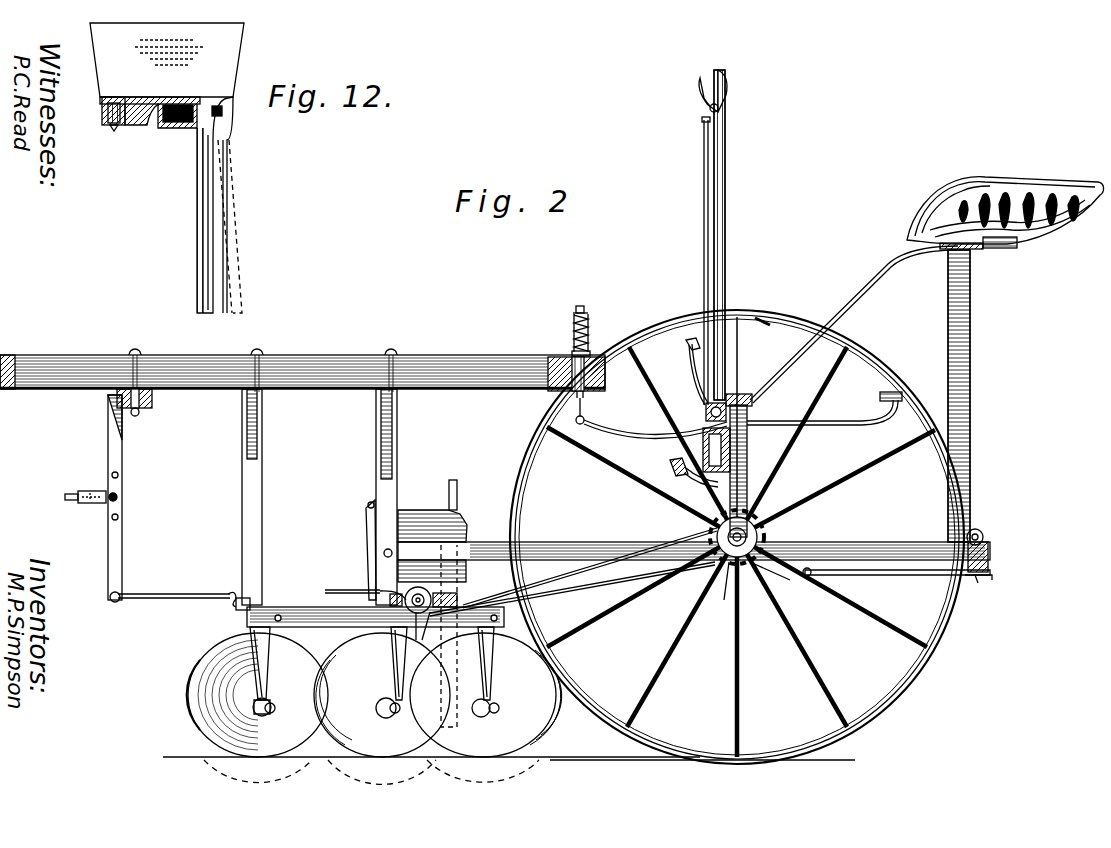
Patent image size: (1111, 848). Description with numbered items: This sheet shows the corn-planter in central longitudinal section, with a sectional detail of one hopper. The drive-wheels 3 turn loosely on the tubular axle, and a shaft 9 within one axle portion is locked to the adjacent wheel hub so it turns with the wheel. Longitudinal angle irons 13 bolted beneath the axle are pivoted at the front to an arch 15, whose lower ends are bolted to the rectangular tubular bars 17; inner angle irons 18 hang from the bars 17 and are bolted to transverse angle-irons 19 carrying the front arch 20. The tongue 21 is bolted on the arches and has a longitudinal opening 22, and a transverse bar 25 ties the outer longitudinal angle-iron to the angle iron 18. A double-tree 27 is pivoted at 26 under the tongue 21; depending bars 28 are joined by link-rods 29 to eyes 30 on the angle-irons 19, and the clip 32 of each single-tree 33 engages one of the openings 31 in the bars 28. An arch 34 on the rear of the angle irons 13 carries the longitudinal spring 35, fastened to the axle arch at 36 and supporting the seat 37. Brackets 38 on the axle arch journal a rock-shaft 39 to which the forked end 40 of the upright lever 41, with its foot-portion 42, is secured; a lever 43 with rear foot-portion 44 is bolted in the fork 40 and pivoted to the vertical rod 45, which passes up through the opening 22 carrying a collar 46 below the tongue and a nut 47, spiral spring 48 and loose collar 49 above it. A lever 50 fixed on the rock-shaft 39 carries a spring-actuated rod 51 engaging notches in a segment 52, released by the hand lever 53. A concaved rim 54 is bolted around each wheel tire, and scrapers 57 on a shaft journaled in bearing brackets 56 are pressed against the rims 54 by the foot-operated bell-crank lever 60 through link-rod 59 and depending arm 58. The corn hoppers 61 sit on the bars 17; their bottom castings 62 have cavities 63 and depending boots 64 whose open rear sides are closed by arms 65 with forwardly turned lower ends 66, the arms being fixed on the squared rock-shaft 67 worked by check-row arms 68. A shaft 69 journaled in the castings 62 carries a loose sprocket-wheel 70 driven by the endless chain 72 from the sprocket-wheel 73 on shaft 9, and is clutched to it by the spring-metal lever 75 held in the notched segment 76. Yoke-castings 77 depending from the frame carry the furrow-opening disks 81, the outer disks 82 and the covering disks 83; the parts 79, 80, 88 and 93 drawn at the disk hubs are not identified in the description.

In FIG. 2, the wheels 3 is at (788, 322).
In FIG. 2, the shaft 9 is at (750, 525).
In FIG. 2, the angle irons 13 is at (694, 551).
In FIG. 2, the arch 15 is at (394, 497).
In FIG. 12, the tubular bars 17 is at (108, 126).
In FIG. 2, the tubular bars 17 is at (388, 606).
In FIG. 2, the angle irons 18 is at (375, 617).
In FIG. 2, the angle-irons 19 is at (268, 604).
In FIG. 2, the arch 20 is at (264, 497).
In FIG. 2, the tongue 21 is at (205, 350).
In FIG. 2, the slot or opening 22 is at (590, 358).
In FIG. 2, the transversely extending bar 25 is at (590, 568).
In FIG. 2, the pivot 26 is at (139, 414).
In FIG. 2, the double-tree 27 is at (152, 405).
In FIG. 2, the bars 28 is at (105, 498).
In FIG. 2, the link-rods 29 is at (174, 586).
In FIG. 2, the eyes 30 is at (225, 590).
In FIG. 2, the openings 31 is at (120, 515).
In FIG. 2, the clip 32 is at (110, 500).
In FIG. 2, the single-trees 33 is at (85, 487).
In FIG. 2, the arch 34 is at (972, 396).
In FIG. 2, the longitudinal spring 35 is at (892, 288).
In FIG. 2, the securing point 36 is at (750, 394).
In FIG. 2, the seat 37 is at (1005, 204).
In FIG. 2, the brackets 38 is at (740, 450).
In FIG. 2, the rock-shaft 39 is at (706, 408).
In FIG. 2, the forked end 40 is at (748, 430).
In FIG. 2, the lever 41 is at (694, 378).
In FIG. 2, the foot-portion 42 is at (686, 340).
In FIG. 2, the lever 43 is at (741, 423).
In FIG. 2, the foot-portion 44 is at (882, 394).
In FIG. 2, the vertical rod 45 is at (584, 418).
In FIG. 2, the collar or enlargement 46 is at (584, 394).
In FIG. 2, the nut 47 is at (578, 301).
In FIG. 2, the spring 48 is at (574, 330).
In FIG. 2, the collar 49 is at (572, 353).
In FIG. 2, the lever 50 is at (731, 235).
In FIG. 2, the spring-actuated rod 51 is at (696, 261).
In FIG. 2, the segment 52 is at (670, 466).
In FIG. 2, the hand lever 53 is at (699, 86).
In FIG. 2, the concaved rim 54 is at (790, 322).
In FIG. 2, the bearing brackets 56 is at (978, 530).
In FIG. 2, the scrapers 57 is at (976, 580).
In FIG. 2, the arm 58 is at (988, 556).
In FIG. 2, the link-rod 59 is at (893, 578).
In FIG. 2, the bell-crank lever 60 is at (800, 570).
In FIG. 12, the corn hoppers or receptacles 61 is at (167, 60).
In FIG. 2, the corn hoppers or receptacles 61 is at (432, 537).
In FIG. 12, the castings 62 is at (158, 97).
In FIG. 12, the cavities 63 is at (188, 104).
In FIG. 12, the boots or spouts 64 is at (196, 256).
In FIG. 2, the boots or spouts 64 is at (441, 690).
In FIG. 12, the arms 65 is at (228, 195).
In FIG. 12, the lower ends of arms 66 is at (228, 305).
In FIG. 12, the squared rock-shaft 67 is at (224, 116).
In FIG. 2, the squared rock-shaft 67 is at (454, 591).
In FIG. 2, the arms 68 is at (461, 483).
In FIG. 12, the shaft 69 is at (165, 128).
In FIG. 2, the shaft 69 is at (417, 633).
In FIG. 2, the sprocket-wheel 70 is at (435, 639).
In FIG. 2, the endless chain 72 is at (572, 589).
In FIG. 2, the sprocket-wheel 73 is at (723, 581).
In FIG. 2, the spring-metal lever 75 is at (351, 582).
In FIG. 2, the notched segment 76 is at (368, 591).
In FIG. 2, the yoke-castings 77 is at (490, 676).
In FIG. 2, the wheel hub 79 is at (473, 720).
In FIG. 2, the wheel hub 80 is at (380, 714).
In FIG. 2, the cutting disks 81 is at (257, 695).
In FIG. 2, the disks 82 is at (382, 695).
In FIG. 2, the disk cutters 83 is at (486, 695).
In FIG. 2, the axle 88 is at (495, 713).
In FIG. 2, the wheel hub 93 is at (254, 711).